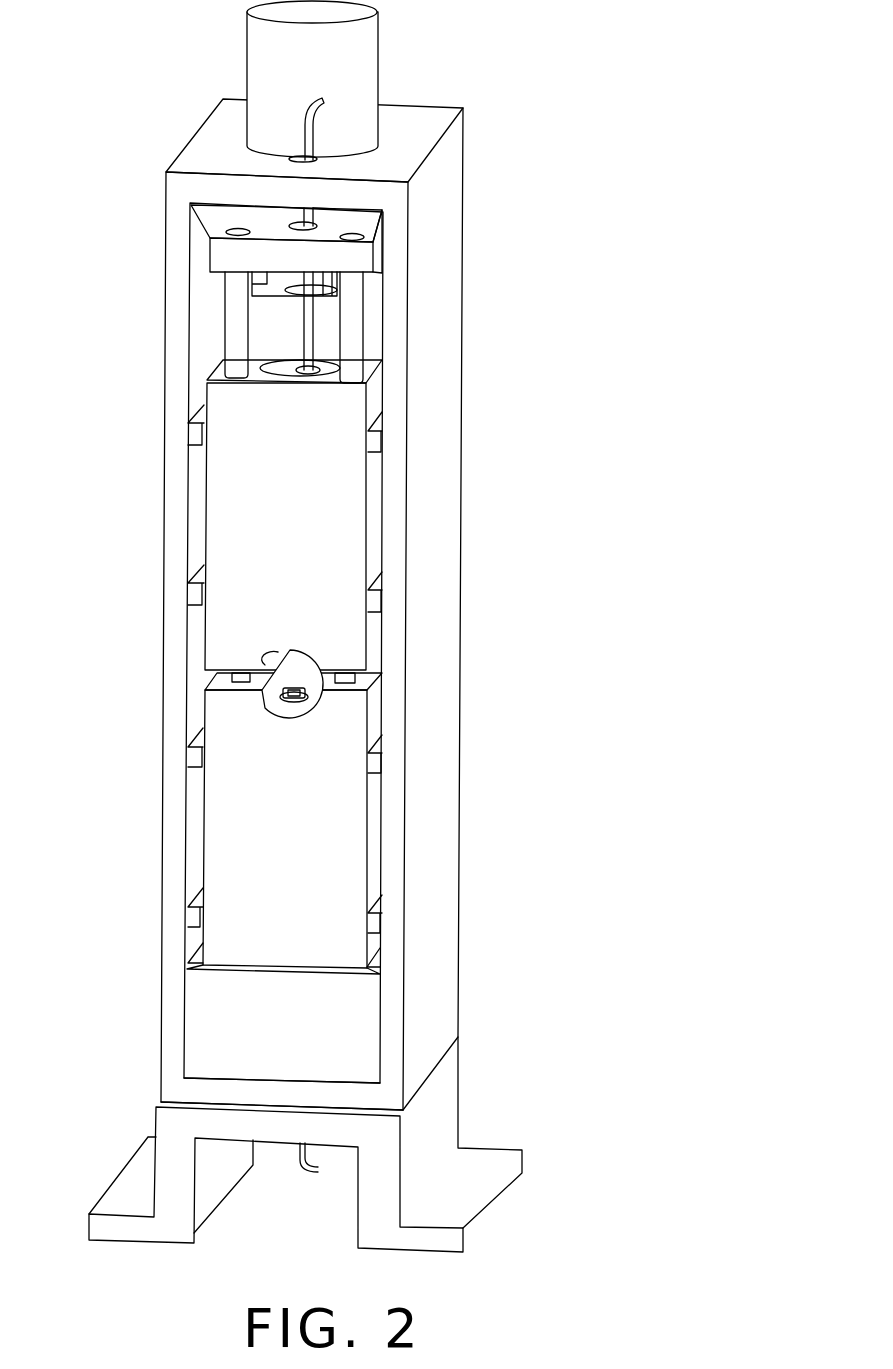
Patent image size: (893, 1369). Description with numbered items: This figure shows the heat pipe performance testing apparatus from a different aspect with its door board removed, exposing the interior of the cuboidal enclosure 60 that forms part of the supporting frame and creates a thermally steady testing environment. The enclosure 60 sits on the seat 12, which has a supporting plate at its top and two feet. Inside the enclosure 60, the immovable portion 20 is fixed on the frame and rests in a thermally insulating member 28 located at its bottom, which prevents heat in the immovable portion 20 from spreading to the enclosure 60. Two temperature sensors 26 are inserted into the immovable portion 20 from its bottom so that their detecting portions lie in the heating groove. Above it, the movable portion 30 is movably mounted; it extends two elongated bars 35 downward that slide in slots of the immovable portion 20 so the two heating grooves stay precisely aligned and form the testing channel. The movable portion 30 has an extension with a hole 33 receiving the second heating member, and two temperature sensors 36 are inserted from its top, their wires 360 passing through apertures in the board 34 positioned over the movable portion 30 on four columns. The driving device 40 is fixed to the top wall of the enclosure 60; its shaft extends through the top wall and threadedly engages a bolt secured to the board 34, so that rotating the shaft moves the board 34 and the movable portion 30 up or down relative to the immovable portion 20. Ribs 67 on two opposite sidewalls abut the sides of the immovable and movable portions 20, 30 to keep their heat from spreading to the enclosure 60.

The seat 12 is at (437, 1097).
The immovable portion 20 is at (262, 826).
The temperature sensors 26 is at (283, 695).
The thermally insulating member 28 is at (243, 1022).
The movable portion 30 is at (268, 505).
The hole 33 is at (285, 289).
The board 34 is at (222, 255).
The elongated bars 35 is at (262, 680).
The temperature sensors 36 is at (266, 358).
The driving device 40 is at (347, 53).
The cuboidal enclosure 60 is at (432, 223).
The ribs 67 is at (373, 603).
The wires 360 is at (313, 337).